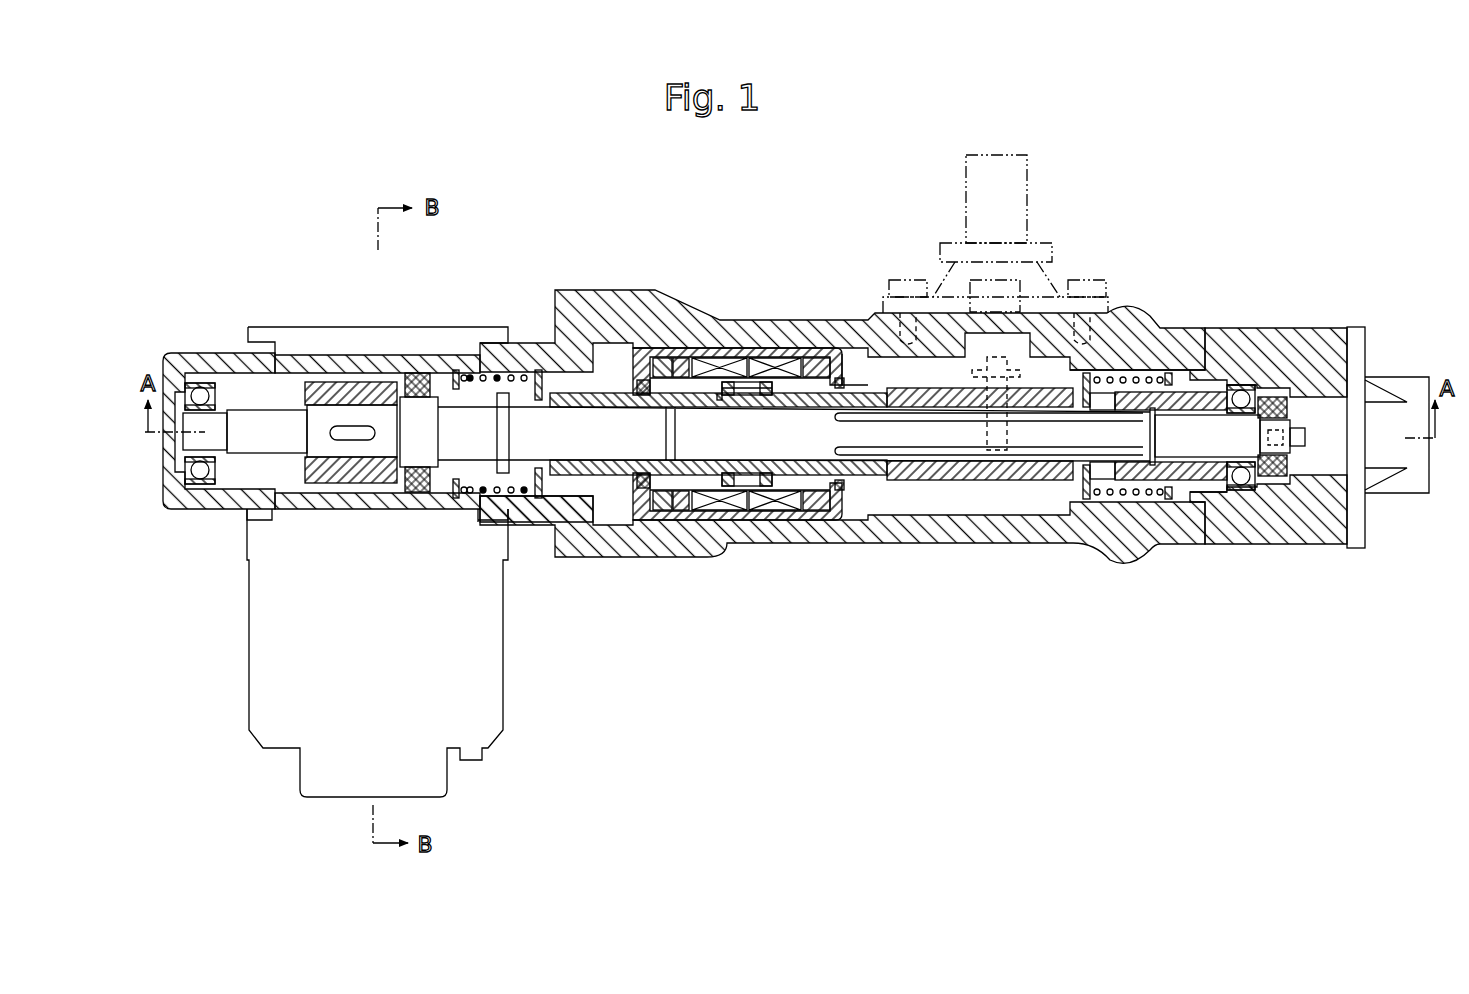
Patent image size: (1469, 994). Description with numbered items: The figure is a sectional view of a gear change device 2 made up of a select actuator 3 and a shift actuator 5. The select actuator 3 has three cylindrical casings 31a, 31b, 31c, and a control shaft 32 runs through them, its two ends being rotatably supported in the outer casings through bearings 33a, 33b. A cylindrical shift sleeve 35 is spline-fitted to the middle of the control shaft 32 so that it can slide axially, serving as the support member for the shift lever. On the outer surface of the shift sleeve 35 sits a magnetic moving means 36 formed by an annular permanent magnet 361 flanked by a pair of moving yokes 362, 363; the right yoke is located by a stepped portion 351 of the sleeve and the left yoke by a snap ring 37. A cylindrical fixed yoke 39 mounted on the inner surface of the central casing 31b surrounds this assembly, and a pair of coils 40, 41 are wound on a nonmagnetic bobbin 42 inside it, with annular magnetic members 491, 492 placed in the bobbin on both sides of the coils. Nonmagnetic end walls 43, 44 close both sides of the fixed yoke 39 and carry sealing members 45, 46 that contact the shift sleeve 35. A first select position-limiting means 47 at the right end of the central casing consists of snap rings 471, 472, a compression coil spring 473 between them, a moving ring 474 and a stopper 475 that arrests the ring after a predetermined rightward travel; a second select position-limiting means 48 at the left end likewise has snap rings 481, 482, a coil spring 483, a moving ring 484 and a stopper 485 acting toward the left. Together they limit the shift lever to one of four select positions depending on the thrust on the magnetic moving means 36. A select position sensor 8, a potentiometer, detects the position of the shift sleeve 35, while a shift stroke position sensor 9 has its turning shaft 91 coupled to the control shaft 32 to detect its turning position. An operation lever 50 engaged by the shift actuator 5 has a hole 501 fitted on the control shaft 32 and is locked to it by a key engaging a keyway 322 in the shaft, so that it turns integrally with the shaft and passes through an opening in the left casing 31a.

The gear change device 2 is at (582, 235).
The select actuator 3 is at (784, 318).
The shift actuator 5 is at (227, 690).
The select position sensor 8 is at (964, 194).
The shift stroke position sensor 9 is at (1389, 376).
The casing 31a is at (200, 352).
The central casing 31b is at (930, 312).
The casing 31c is at (1297, 340).
The control shaft 32 is at (521, 408).
The keyway 322 is at (353, 380).
The bearing 33a is at (190, 498).
The bearing 33b is at (1242, 384).
The shift sleeve 35 is at (906, 481).
The magnetic moving means 36 is at (706, 386).
The snap ring 37 is at (668, 410).
The fixed yoke 39 is at (734, 356).
The coil 40 is at (773, 512).
The coil 41 is at (720, 527).
The bobbin 42 is at (663, 358).
The end wall 43 is at (846, 358).
The end wall 44 is at (620, 358).
The sealing member 45 is at (860, 347).
The sealing member 46 is at (630, 383).
The first select position-limiting means 47 is at (1089, 370).
The second select position-limiting means 48 is at (470, 372).
The operation lever 50 is at (370, 508).
The turning shaft 91 is at (1297, 447).
The stepped portion 351 is at (800, 352).
The permanent magnet 361 is at (747, 396).
The moving yoke 362 is at (768, 392).
The moving yoke 363 is at (735, 397).
The snap ring 471 is at (1083, 499).
The snap ring 472 is at (1172, 502).
The compression coil spring 473 is at (1166, 500).
The moving ring 474 is at (1118, 481).
The stopper 475 is at (1109, 370).
The snap ring 481 is at (583, 517).
The snap ring 482 is at (453, 500).
The coil spring 483 is at (468, 382).
The moving ring 484 is at (527, 500).
The stopper 485 is at (504, 392).
The magnetic member 491 is at (836, 377).
The magnetic member 492 is at (688, 348).
The hole 501 is at (380, 426).